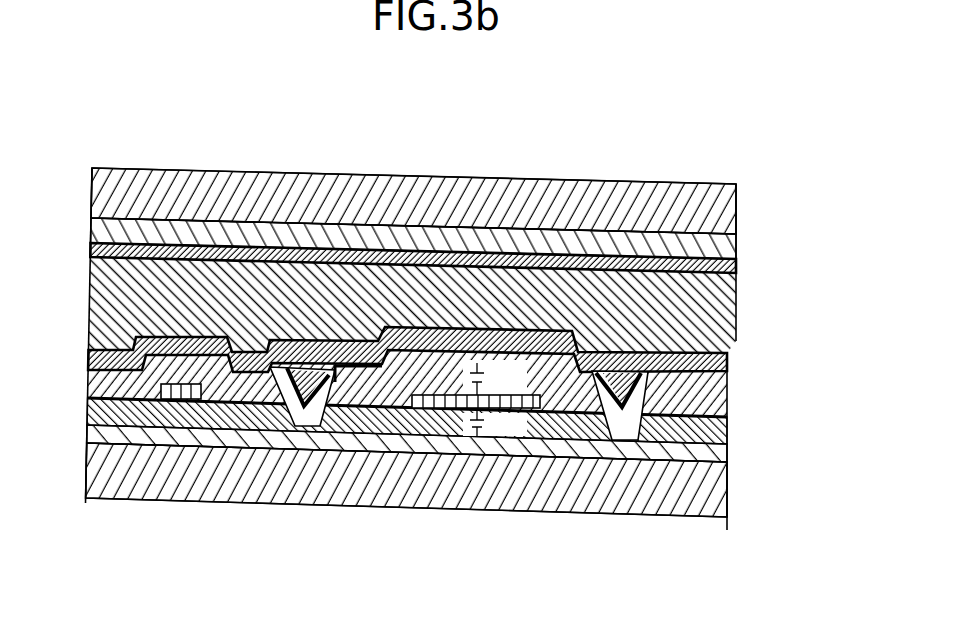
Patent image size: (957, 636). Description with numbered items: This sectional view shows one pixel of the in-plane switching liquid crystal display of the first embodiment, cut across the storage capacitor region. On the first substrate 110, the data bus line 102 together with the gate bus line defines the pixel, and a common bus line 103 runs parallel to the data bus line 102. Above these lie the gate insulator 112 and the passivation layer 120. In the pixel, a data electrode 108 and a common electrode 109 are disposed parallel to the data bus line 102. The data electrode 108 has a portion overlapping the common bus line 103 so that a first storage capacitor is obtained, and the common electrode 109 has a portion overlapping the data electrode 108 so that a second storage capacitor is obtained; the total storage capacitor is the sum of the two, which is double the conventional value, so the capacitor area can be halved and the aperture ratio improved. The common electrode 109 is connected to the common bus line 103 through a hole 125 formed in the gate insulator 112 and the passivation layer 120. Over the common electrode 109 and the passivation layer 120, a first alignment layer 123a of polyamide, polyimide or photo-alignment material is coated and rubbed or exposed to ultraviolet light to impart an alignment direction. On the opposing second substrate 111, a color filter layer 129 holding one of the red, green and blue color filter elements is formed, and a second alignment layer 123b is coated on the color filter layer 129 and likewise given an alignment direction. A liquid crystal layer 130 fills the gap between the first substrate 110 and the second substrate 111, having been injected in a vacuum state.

The data bus line 102 is at (168, 400).
The common bus line 103 is at (726, 472).
The data electrode 108 is at (428, 409).
The common electrode 109 is at (331, 432).
The first substrate 110 is at (660, 515).
The second substrate 111 is at (548, 182).
The gate insulator 112 is at (723, 437).
The passivation layer 120 is at (717, 408).
The first alignment layer 123a is at (700, 360).
The second alignment layer 123b is at (737, 278).
The hole 125 is at (297, 428).
The color filter layer 129 is at (737, 243).
The liquid crystal layer 130 is at (113, 276).